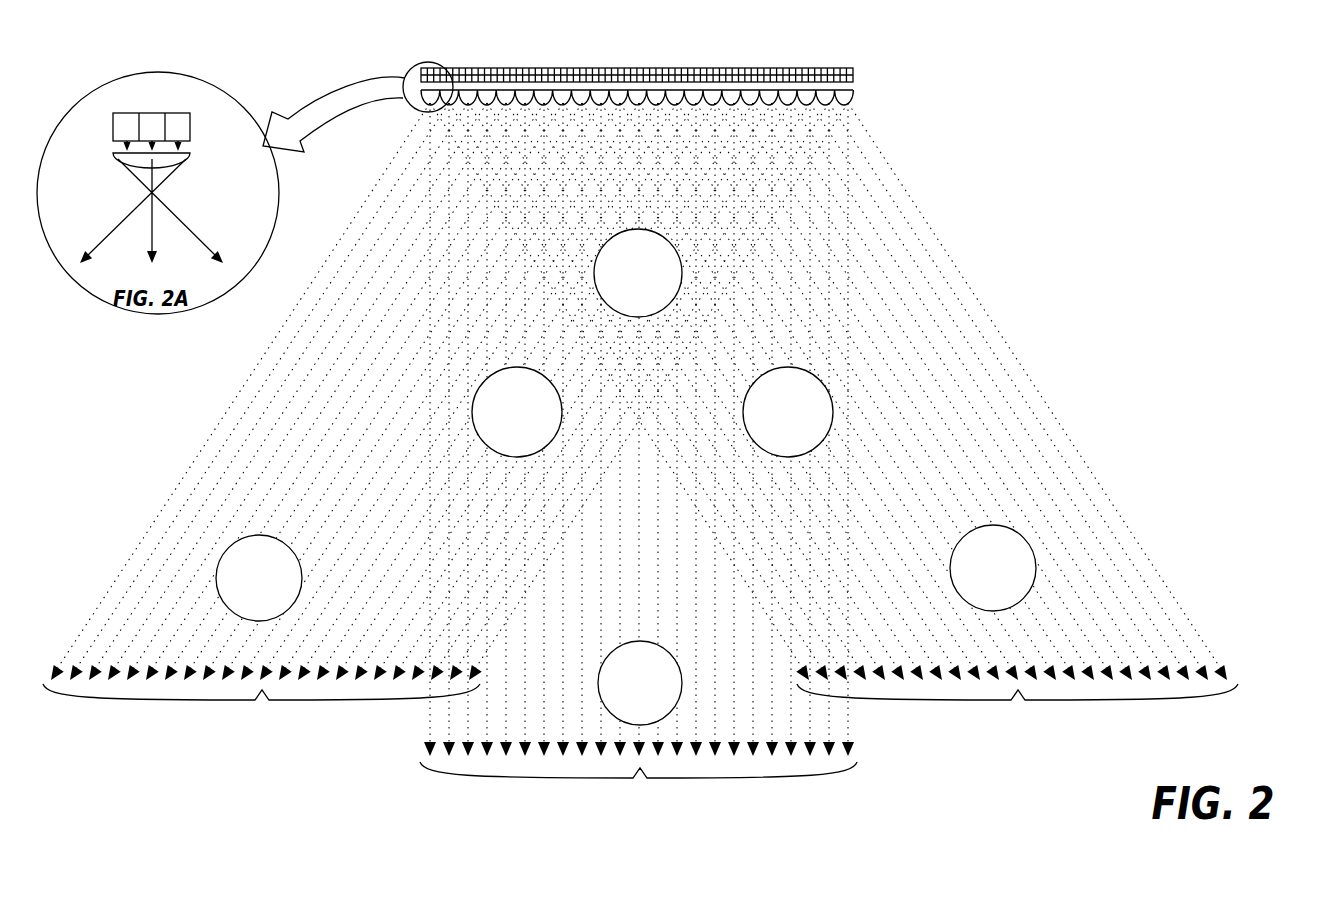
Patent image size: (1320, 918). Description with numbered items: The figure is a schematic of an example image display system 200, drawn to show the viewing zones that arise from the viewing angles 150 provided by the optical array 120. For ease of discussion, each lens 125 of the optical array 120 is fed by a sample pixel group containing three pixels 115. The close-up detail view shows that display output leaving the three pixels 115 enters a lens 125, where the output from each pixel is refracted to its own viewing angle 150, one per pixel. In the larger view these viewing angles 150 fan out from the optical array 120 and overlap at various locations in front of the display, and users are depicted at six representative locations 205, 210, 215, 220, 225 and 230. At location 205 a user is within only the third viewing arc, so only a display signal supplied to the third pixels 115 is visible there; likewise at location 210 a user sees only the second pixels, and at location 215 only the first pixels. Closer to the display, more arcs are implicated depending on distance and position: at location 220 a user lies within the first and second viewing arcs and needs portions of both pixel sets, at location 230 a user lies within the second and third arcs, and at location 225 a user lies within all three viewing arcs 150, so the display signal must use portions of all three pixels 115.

In FIG. 2, the image display system 200 is at (1168, 73).
In FIG. 2, the pixels 115 is at (838, 68).
In FIG. 2A, the pixels 115 is at (152, 113).
In FIG. 2, the optical array 120 is at (861, 95).
In FIG. 2, the lens 125 is at (862, 100).
In FIG. 2A, the lens 125 is at (185, 163).
In FIG. 2, the viewing angle 150 is at (640, 739).
In FIG. 2A, the viewing angle 150 is at (127, 213).
In FIG. 2, the location 205 is at (259, 578).
In FIG. 2, the location 210 is at (640, 683).
In FIG. 2, the location 215 is at (993, 568).
In FIG. 2, the location 220 is at (517, 412).
In FIG. 2, the location 225 is at (638, 273).
In FIG. 2, the location 230 is at (788, 412).